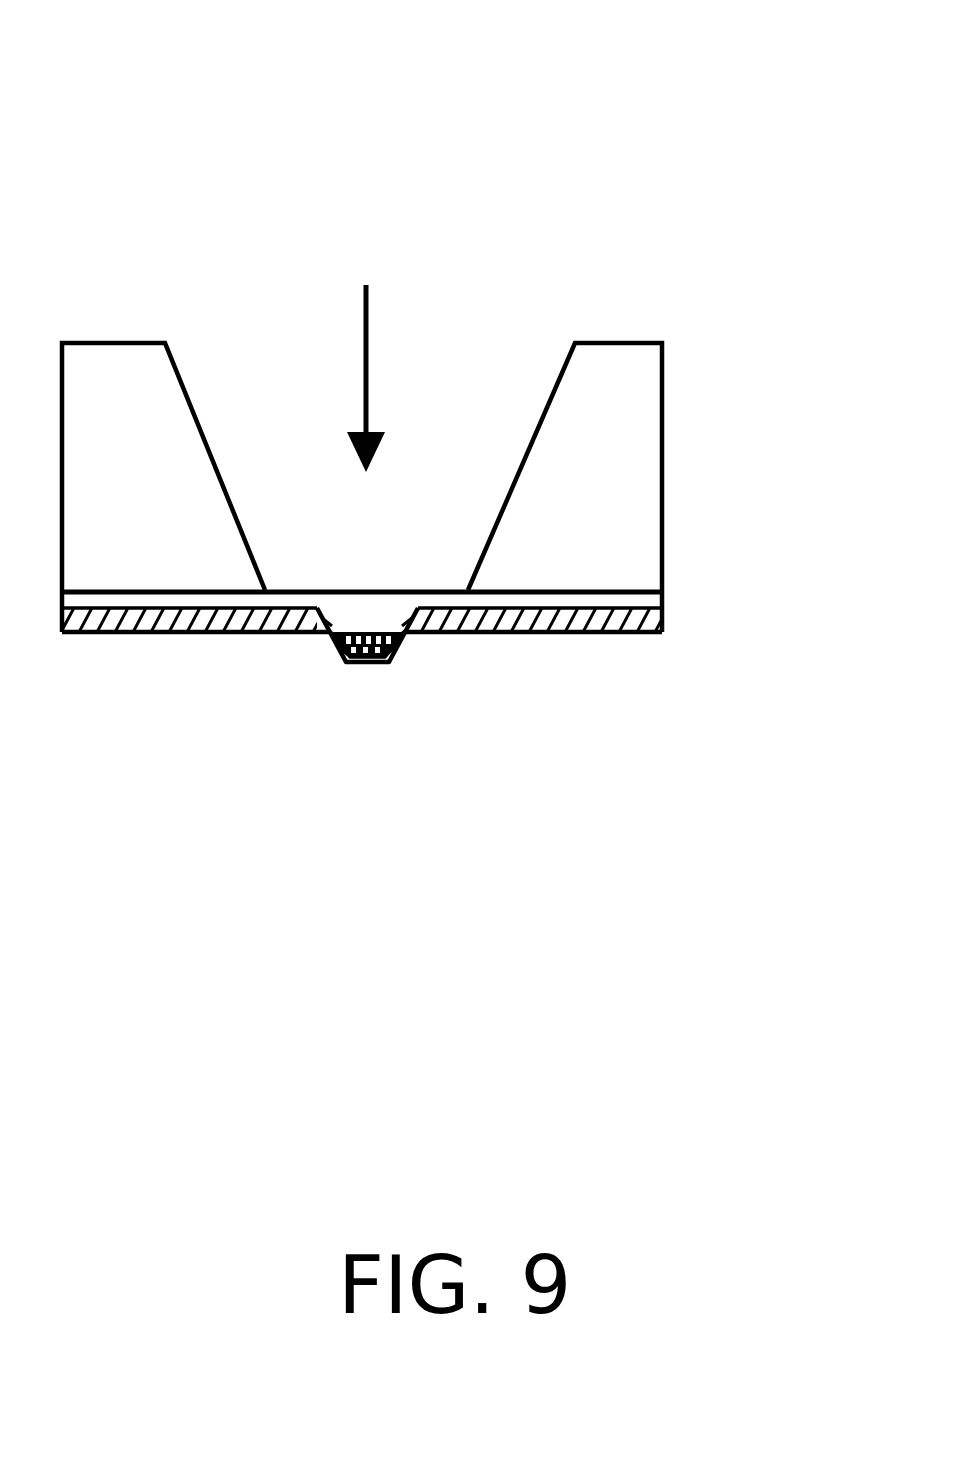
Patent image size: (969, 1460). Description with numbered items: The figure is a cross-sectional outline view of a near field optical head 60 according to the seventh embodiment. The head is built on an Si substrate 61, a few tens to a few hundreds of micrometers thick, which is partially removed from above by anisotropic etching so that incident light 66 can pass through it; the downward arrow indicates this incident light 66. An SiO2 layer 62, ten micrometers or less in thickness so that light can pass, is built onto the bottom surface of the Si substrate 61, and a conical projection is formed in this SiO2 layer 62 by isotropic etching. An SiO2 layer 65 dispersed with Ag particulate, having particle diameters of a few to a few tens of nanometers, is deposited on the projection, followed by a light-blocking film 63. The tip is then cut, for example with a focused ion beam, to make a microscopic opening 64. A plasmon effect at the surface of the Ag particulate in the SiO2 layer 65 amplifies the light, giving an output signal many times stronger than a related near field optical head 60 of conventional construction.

The near field optical head 60 is at (800, 48).
The Si substrate 61 is at (633, 473).
The SiO2 layer 62 is at (662, 590).
The light-blocking film 63 is at (663, 625).
The microscopic opening 64 is at (373, 663).
The SiO2 layer including Ag particulate 65 is at (337, 635).
The incident light 66 is at (370, 335).